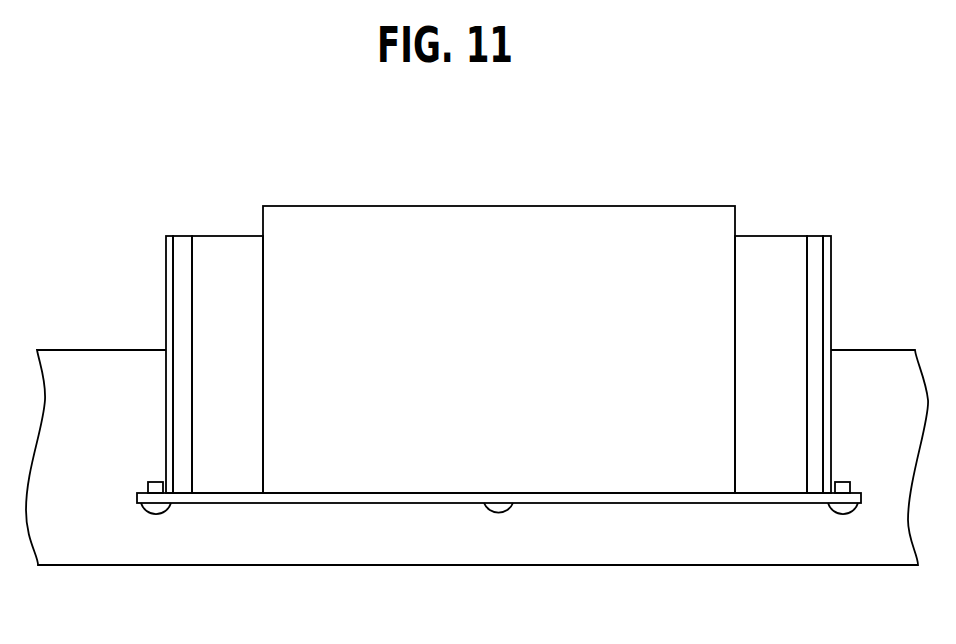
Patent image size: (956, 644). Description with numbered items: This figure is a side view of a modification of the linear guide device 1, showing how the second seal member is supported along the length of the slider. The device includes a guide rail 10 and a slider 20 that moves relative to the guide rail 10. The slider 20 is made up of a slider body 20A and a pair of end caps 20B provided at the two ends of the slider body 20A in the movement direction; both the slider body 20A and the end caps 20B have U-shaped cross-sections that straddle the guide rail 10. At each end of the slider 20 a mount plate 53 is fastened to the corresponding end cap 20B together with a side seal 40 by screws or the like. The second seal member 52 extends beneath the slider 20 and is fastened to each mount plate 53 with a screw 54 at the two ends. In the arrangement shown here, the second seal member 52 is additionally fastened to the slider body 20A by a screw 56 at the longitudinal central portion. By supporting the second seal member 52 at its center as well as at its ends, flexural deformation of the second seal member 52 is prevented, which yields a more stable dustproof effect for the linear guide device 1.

The linear guide device 1 is at (78, 181).
The guide rail 10 is at (142, 360).
The slider 20 is at (653, 184).
The slider body 20A is at (392, 215).
The end cap 20B is at (232, 243).
The side seal 40 is at (182, 243).
The second seal member 52 is at (620, 503).
The mount plate 53 is at (170, 265).
The screw 54 is at (156, 510).
The screw 56 is at (498, 510).